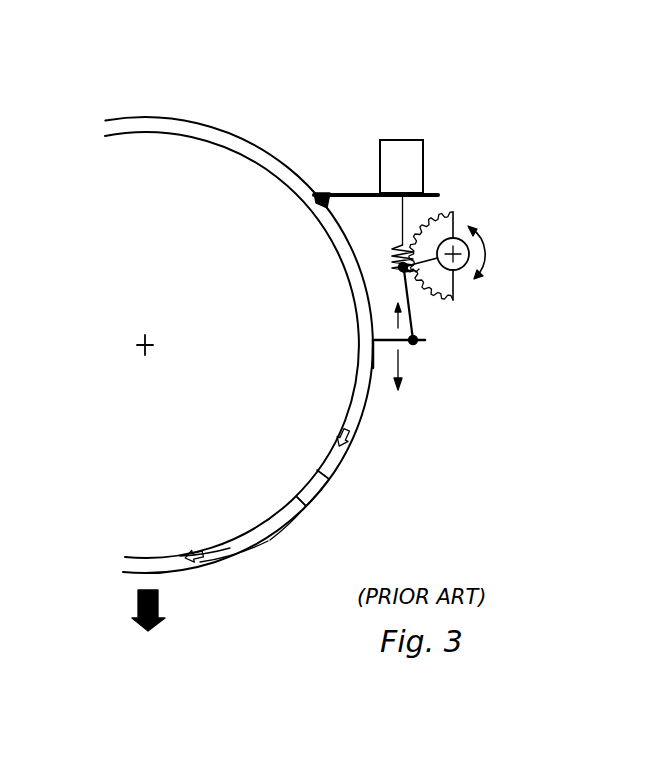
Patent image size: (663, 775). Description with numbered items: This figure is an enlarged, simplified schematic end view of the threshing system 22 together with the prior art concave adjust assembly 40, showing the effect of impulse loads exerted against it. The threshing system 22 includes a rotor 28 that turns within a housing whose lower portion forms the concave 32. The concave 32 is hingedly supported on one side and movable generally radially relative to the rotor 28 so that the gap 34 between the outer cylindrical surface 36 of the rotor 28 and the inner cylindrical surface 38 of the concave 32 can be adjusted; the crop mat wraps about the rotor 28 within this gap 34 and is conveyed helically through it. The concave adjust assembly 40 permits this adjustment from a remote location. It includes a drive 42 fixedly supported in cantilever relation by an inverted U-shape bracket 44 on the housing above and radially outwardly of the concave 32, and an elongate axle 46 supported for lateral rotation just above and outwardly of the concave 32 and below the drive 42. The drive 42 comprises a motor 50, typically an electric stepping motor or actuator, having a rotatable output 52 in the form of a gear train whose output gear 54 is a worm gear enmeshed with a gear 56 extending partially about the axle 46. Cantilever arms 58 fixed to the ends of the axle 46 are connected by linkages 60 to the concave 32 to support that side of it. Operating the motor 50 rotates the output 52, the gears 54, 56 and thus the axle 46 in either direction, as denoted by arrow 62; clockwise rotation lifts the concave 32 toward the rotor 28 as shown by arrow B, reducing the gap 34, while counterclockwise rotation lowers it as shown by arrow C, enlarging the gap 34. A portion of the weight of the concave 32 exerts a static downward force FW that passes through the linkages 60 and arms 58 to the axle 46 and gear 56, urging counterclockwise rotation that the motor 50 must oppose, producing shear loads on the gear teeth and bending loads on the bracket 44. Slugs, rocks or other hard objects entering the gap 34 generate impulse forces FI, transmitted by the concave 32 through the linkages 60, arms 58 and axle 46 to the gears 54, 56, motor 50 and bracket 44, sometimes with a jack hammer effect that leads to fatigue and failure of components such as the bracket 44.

The threshing system 22 is at (300, 100).
The rotor 28 is at (235, 154).
The concave 32 is at (268, 541).
The gap 34 is at (230, 548).
The outer cylindrical surface 36 is at (332, 482).
The inner cylindrical surface 38 is at (297, 497).
The concave adjust assembly 40 is at (428, 137).
The drive 42 is at (428, 137).
The bracket 44 is at (348, 193).
The axle 46 is at (457, 238).
The motor 50 is at (395, 140).
The rotatable output 52 is at (403, 247).
The output gear 54 is at (396, 268).
The gear 56 is at (455, 292).
The cantilever arms 58 is at (430, 288).
The linkages 60 is at (408, 320).
The arrow 62 is at (485, 244).
The arrow B is at (394, 319).
The arrow C is at (402, 363).
The impulse forces FI is at (333, 438).
The static downwardly directed force FW is at (138, 615).